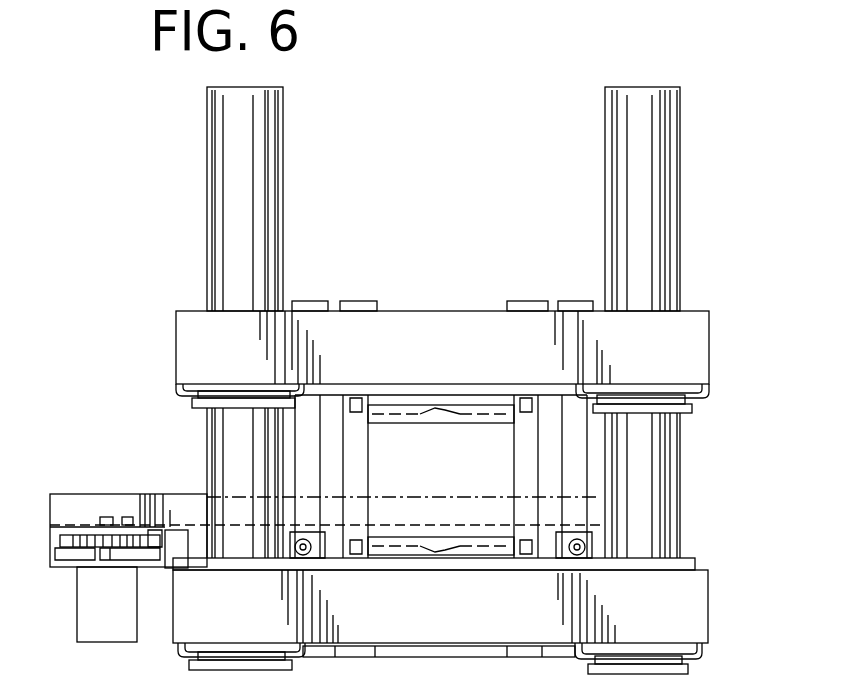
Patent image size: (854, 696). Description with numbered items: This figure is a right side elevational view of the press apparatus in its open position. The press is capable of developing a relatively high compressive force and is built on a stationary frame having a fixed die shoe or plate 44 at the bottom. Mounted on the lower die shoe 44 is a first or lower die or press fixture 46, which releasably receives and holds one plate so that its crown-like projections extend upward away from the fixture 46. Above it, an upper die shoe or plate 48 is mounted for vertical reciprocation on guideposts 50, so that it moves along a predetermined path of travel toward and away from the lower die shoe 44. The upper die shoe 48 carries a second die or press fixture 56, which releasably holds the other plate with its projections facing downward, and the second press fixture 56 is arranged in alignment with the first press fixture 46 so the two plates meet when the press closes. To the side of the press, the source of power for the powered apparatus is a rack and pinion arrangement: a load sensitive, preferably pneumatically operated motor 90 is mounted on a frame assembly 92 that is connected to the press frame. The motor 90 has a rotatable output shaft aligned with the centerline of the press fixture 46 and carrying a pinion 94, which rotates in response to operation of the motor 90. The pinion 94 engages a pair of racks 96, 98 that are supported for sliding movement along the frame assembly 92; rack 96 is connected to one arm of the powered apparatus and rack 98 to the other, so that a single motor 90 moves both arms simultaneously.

The fixed die shoe or plate 44 is at (678, 615).
The first or lower die or press fixture 46 is at (408, 536).
The upper die shoe or plate 48 is at (690, 348).
The guideposts 50 is at (265, 243).
The second die or press fixture 56 is at (400, 424).
The motor 90 is at (125, 634).
The frame assembly 92 is at (113, 563).
The pinion 94 is at (97, 538).
The rack 96 is at (160, 535).
The rack 98 is at (70, 553).